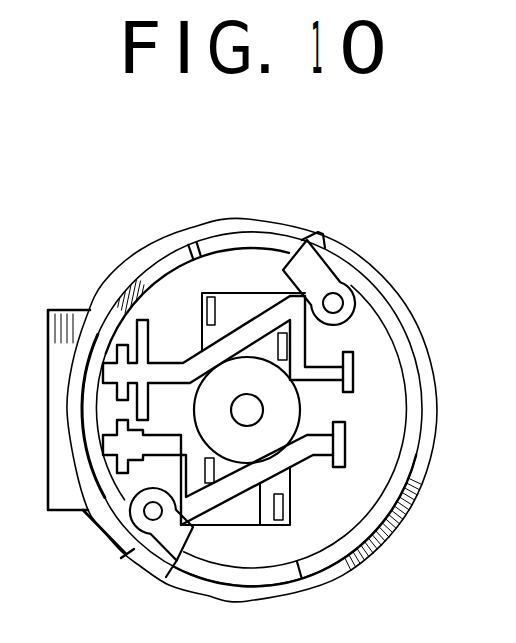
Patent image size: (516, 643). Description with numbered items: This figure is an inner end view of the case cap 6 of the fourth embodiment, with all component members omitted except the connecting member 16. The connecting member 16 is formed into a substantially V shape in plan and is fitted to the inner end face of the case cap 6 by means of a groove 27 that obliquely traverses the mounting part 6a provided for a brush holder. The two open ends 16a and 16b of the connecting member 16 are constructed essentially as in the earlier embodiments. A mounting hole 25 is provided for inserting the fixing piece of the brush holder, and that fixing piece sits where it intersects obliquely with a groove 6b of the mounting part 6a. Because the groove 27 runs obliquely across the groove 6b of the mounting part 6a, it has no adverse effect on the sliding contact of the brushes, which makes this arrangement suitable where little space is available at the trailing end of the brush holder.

The case cap 6 is at (243, 260).
The mounting part 6a is at (286, 278).
The groove 6b is at (255, 300).
The connecting member 16 is at (236, 332).
The open end of the connecting member 16a is at (120, 292).
The open end of the connecting member 16b is at (343, 357).
The mounting hole 25 is at (190, 303).
The groove 27 is at (248, 475).